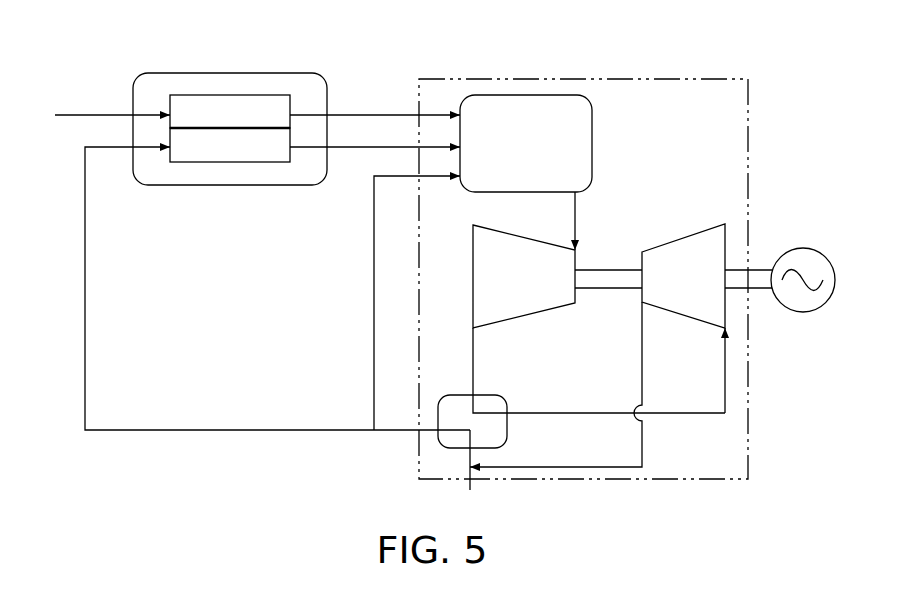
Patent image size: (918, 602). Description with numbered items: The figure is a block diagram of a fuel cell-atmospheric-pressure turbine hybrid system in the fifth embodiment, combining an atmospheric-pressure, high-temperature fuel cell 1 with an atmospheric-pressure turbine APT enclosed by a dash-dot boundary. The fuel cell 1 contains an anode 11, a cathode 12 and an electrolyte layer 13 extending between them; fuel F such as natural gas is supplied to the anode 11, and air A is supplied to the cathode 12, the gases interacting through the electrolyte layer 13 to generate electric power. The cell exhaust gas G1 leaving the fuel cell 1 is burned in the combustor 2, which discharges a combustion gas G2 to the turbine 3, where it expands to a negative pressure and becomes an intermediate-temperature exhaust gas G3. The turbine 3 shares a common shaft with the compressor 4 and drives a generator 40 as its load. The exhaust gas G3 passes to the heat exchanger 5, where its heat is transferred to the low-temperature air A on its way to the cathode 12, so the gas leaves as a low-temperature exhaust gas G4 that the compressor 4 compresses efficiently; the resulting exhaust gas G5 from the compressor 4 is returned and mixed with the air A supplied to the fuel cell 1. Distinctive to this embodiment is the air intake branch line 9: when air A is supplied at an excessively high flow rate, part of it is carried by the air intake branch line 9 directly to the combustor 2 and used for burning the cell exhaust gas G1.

The fuel cell 1 is at (188, 185).
The anode 11 is at (273, 95).
The cathode 12 is at (265, 162).
The electrolyte layer 13 is at (280, 128).
The combustor 2 is at (592, 130).
The turbine 3 is at (472, 258).
The compressor 4 is at (688, 236).
The heat exchanger 5 is at (458, 395).
The air intake branch line 9 is at (374, 274).
The generator 40 is at (808, 313).
The fuel F is at (98, 110).
The air A is at (350, 366).
The cell exhaust gas G1 is at (415, 145).
The combustion gas G2 is at (577, 208).
The exhaust gas G3 is at (475, 352).
The exhaust gas G4 is at (724, 366).
The exhaust gas G5 is at (578, 466).
The atmospheric-pressure turbine APT is at (655, 80).